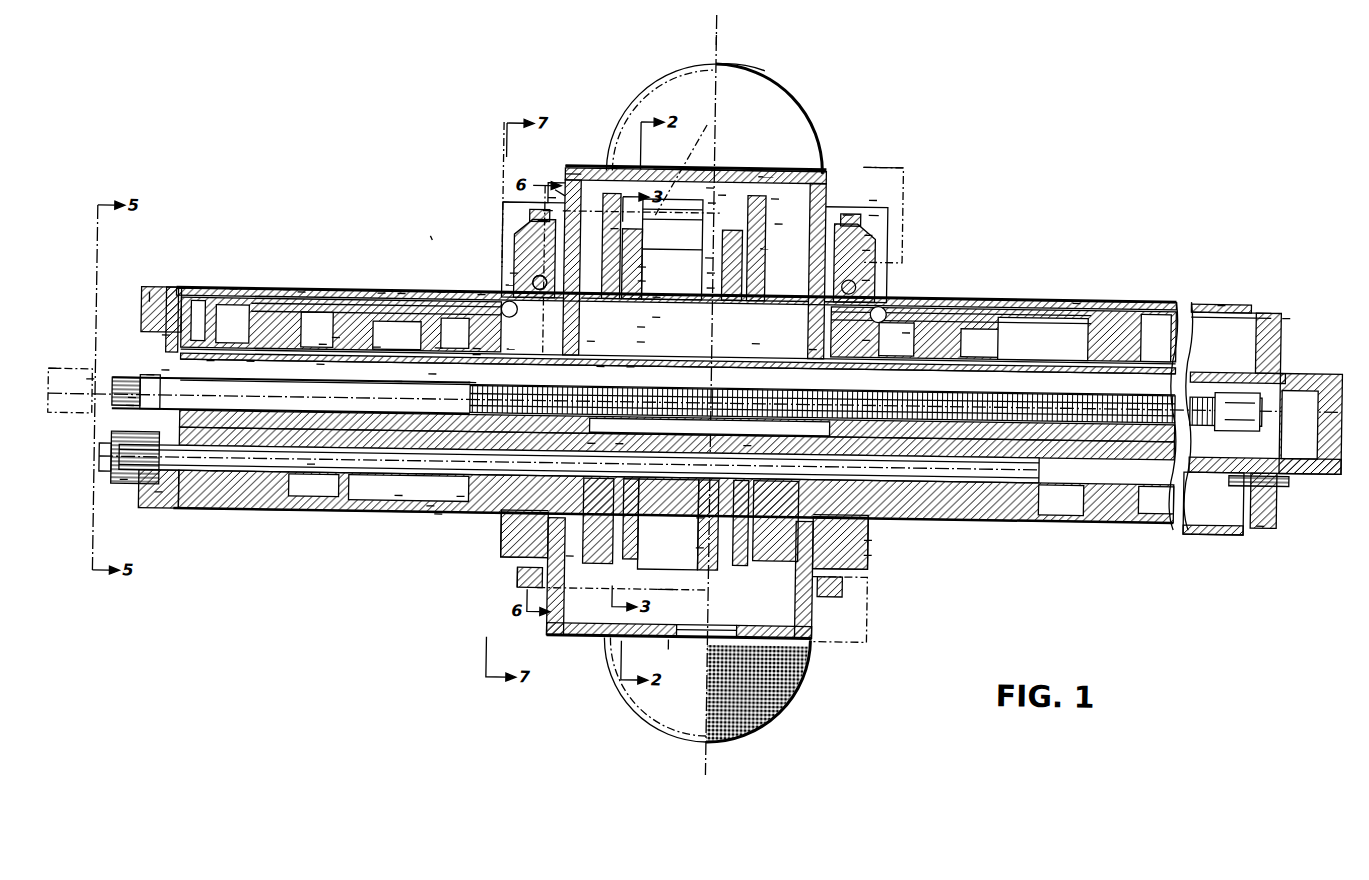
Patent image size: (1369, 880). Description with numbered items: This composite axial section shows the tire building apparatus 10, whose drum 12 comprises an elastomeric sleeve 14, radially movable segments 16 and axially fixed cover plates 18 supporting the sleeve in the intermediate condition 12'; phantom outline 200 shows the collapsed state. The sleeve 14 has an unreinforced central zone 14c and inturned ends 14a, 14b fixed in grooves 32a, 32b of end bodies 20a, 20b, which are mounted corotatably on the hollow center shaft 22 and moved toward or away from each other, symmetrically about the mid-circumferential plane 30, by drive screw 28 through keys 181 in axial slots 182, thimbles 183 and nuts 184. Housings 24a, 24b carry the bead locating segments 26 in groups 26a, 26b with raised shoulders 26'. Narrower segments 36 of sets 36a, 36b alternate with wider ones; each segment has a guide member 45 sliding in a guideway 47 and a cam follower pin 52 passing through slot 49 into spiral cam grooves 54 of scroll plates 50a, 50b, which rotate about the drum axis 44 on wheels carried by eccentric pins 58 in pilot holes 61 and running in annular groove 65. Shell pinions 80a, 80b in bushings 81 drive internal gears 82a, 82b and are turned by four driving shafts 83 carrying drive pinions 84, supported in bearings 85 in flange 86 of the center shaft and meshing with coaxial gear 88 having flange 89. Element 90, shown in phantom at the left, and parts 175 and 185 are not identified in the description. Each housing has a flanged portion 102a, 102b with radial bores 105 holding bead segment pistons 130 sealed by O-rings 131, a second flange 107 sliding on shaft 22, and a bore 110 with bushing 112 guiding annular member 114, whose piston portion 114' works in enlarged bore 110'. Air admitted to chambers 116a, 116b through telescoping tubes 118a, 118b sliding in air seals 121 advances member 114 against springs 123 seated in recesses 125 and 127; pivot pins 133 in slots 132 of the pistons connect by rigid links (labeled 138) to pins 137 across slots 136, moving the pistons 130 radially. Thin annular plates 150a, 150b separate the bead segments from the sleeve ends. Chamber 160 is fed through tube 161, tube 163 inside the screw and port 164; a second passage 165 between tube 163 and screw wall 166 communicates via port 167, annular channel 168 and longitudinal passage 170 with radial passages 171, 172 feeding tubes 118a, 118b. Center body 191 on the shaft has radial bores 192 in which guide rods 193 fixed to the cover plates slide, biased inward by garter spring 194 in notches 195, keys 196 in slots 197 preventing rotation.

The tire building apparatus 10 is at (428, 240).
The drum 12 is at (582, 122).
The intermediate cylindrical condition of the drum 12' is at (743, 397).
The sleeve 14 is at (762, 70).
The radially inwardly turned end portion of the sleeve 14a is at (556, 195).
The radially inwardly turned end portion of the sleeve 14b is at (868, 200).
The central zone of the sleeve 14c is at (704, 125).
The segments 16 is at (660, 170).
The cover plates 18 is at (696, 170).
The end body 20a is at (600, 370).
The end body 20b is at (812, 350).
The center shaft 22 is at (335, 345).
The cylindrical housing 24a is at (508, 290).
The cylindrical housing 24b is at (1075, 300).
The bead locating segments 26 is at (483, 576).
The group of bead locating segments 26a is at (545, 215).
The group of bead locating segments 26b is at (845, 215).
The raised shoulder portions 26' is at (676, 385).
The axial drive screw shaft 28 is at (672, 390).
The mid-circumferential plane 30 is at (714, 40).
The groove 32a is at (612, 232).
The groove 32b is at (870, 555).
The segments of lesser arcuate width 36 is at (865, 340).
The segment of lesser arcuate width 36a is at (566, 180).
The segment of lesser arcuate width 36b is at (761, 176).
The drum axis 44 is at (398, 385).
The guide member 45 is at (770, 200).
The guideway 47 is at (630, 370).
The slot 49 is at (640, 283).
The scroll plate 50a is at (655, 320).
The scroll plate 50b is at (762, 250).
The cam follower pin 52 is at (775, 225).
The spiral cam grooves 54 is at (640, 268).
The pin 58 is at (640, 345).
The pilot hole 61 is at (590, 345).
The annular groove 65 is at (655, 300).
The shell pinions 80a is at (620, 445).
The shell pinions 80b is at (748, 445).
The bushings 81 is at (592, 445).
The internal gear 82a is at (640, 330).
The internal gear 82b is at (700, 520).
The driving shafts 83 is at (312, 472).
The drive pinion 84 is at (125, 490).
The bearings 85 is at (160, 502).
The flange of the center shaft 86 is at (180, 298).
The coaxial gear 88 is at (130, 416).
The coaxial flange 89 is at (165, 345).
The motor 90 is at (48, 378).
The flanged portion 102a is at (512, 278).
The flanged portion 102b is at (870, 540).
The radially extending bores 105 is at (862, 280).
The second flange 107 is at (300, 300).
The coaxial bore 110 is at (692, 281).
The enlarged cylindrical bore 110' is at (665, 339).
The bushing 112 is at (400, 300).
The rigid annular member 114 is at (425, 268).
The piston portion 114' is at (688, 293).
The chamber 116a is at (475, 335).
The chamber 116b is at (905, 332).
The telescopically sliding tube 118a is at (285, 298).
The telescopically sliding tube 118b is at (1220, 300).
The air seals 121 is at (232, 298).
The springs 123 is at (462, 502).
The recesses 125 is at (572, 560).
The cooperating recesses 127 is at (432, 512).
The bead segment pistons 130 is at (865, 235).
The O-ring 131 is at (862, 250).
The transverse slot 132 is at (860, 265).
The pivot pin 133 is at (480, 300).
The radial slots 136 is at (475, 345).
The pin 137 is at (874, 286).
The pin 138 is at (755, 345).
The thin annular plate 150a is at (548, 200).
The thin annular plate 150b is at (870, 215).
The chamber 160 is at (693, 238).
The tube 161 is at (90, 390).
The tube 163 is at (250, 370).
The port 164 is at (320, 372).
The second air passage 165 is at (150, 385).
The wall of the screw 166 is at (165, 380).
The port 167 is at (210, 370).
The annular channel 168 is at (215, 480).
The air passage 170 is at (322, 352).
The radial passage 171 is at (150, 305).
The radial passage 172 is at (1285, 312).
The nut 175 is at (1262, 520).
The keys 181 is at (470, 388).
The elongate axial slots 182 is at (400, 502).
The thimble 183 is at (432, 380).
The nut 184 is at (440, 520).
The spline 185 is at (132, 408).
The center body 191 is at (700, 550).
The bores 192 is at (707, 290).
The guide rods 193 is at (708, 205).
The garter spring 194 is at (705, 190).
The notches 195 is at (719, 195).
The keys 196 is at (707, 275).
The slot 197 is at (705, 260).
The phantom outline 200 is at (670, 608).